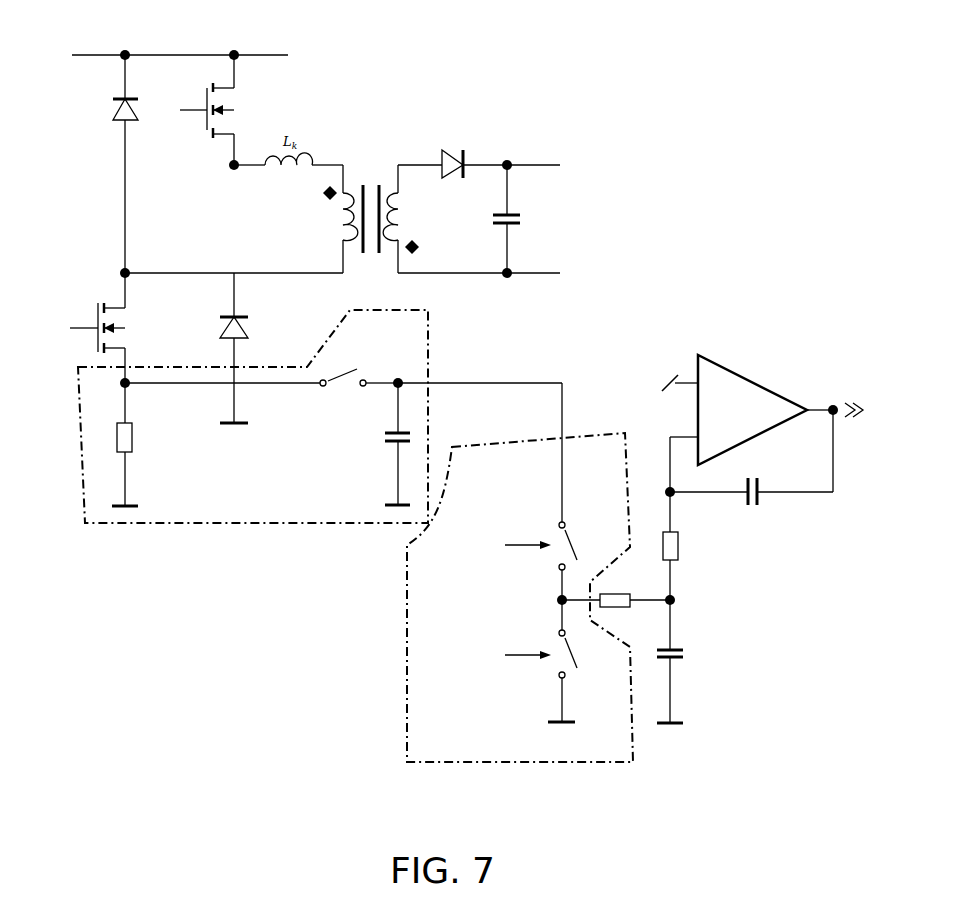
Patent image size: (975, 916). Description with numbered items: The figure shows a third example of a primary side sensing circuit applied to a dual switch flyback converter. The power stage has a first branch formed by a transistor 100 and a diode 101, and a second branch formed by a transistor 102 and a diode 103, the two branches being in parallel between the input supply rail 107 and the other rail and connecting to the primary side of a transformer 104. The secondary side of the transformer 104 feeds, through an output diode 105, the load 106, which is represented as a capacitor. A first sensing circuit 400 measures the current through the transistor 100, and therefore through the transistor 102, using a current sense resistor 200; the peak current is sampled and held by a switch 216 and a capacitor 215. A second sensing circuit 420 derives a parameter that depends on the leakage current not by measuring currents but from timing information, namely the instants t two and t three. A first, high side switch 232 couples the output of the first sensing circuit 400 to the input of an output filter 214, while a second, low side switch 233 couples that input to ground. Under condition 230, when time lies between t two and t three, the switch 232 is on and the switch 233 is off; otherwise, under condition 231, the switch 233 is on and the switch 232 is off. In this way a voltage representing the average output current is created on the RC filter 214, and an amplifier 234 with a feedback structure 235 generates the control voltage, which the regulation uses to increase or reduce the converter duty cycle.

The transistor 100 is at (130, 336).
The diode 101 is at (112, 108).
The transistor 102 is at (240, 130).
The diode 103 is at (250, 328).
The transformer 104 is at (370, 185).
The output diode 105 is at (466, 160).
The load 106 is at (520, 215).
The input supply rail 107 is at (152, 50).
The current sense resistor 200 is at (140, 445).
The output filter 214 is at (615, 612).
The capacitor 215 is at (385, 436).
The switch 216 is at (343, 368).
The condition 230 is at (488, 525).
The condition 231 is at (487, 675).
The first (high side) switch 232 is at (580, 562).
The second (low side) switch 233 is at (577, 648).
The amplifier 234 is at (755, 377).
The feedback structure 235 is at (680, 547).
The first sensing circuit 400 is at (148, 527).
The second sensing circuit 420 is at (406, 667).